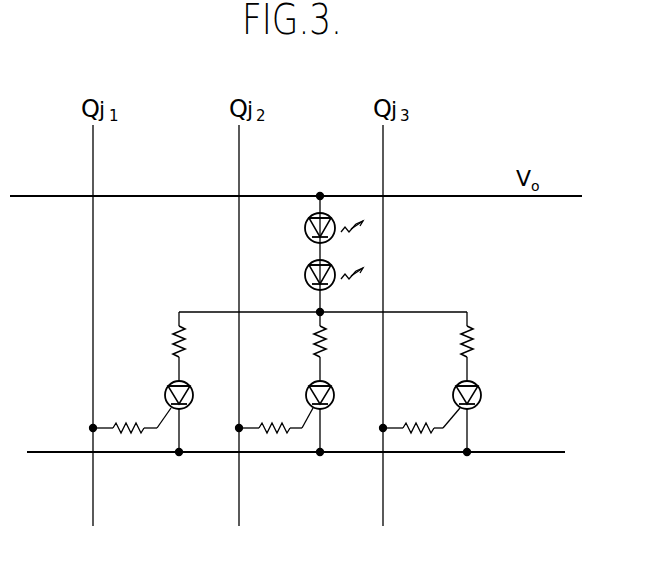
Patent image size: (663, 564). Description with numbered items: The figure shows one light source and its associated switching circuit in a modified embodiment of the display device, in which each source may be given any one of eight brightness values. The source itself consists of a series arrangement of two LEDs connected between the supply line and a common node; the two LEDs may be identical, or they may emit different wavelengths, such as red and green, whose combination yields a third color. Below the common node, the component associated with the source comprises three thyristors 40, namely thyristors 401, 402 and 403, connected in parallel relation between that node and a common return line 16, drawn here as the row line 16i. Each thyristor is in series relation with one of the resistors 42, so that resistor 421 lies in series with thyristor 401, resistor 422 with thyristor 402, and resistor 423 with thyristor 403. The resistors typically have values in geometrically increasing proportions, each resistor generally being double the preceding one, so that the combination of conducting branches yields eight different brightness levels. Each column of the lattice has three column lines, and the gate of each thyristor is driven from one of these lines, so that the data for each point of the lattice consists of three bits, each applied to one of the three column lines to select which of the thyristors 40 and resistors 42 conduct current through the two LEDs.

The resistor 42 is at (330, 325).
The resistor 421 is at (176, 327).
The resistor 422 is at (312, 334).
The resistor 423 is at (478, 337).
The thyristor 40 is at (333, 378).
The thyristor 401 is at (172, 383).
The thyristor 402 is at (306, 391).
The thyristor 403 is at (482, 393).
The row line 16i 16 is at (294, 423).
The row line 16i is at (35, 447).